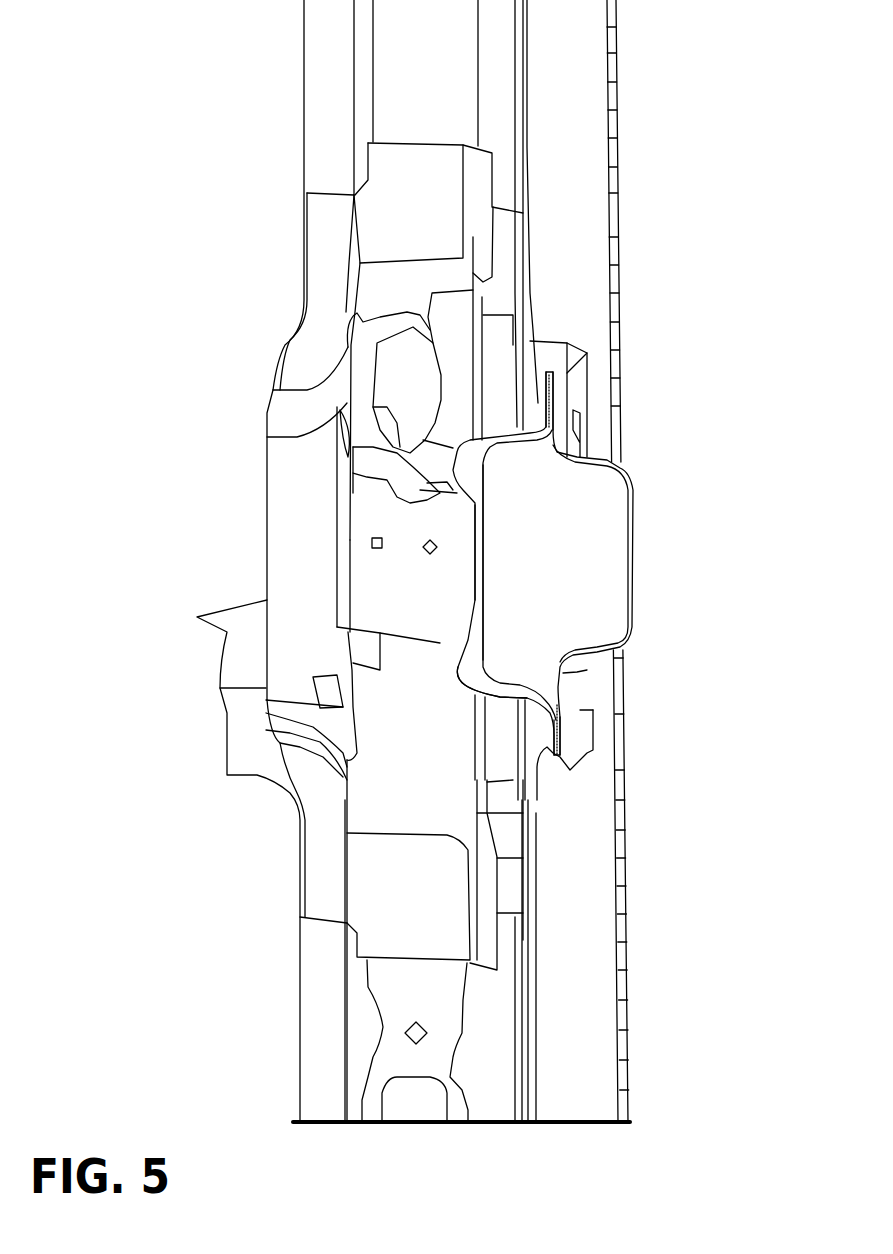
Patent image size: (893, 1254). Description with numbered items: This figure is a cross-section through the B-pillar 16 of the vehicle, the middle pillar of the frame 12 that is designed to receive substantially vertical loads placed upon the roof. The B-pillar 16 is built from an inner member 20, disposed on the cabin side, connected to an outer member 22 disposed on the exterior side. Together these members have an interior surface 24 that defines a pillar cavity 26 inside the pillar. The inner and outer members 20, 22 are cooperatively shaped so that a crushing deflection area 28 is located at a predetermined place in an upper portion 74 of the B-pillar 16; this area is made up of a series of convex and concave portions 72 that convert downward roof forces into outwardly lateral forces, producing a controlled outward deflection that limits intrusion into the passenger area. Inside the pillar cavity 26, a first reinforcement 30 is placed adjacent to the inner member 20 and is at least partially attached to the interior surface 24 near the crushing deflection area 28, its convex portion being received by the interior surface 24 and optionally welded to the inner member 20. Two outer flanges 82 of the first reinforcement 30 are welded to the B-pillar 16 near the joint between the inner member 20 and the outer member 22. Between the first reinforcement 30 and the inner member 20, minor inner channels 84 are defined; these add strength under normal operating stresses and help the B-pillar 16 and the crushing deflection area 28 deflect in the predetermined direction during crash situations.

The frame 12 is at (257, 143).
The B-pillar 16 is at (253, 881).
The inner member 20 is at (297, 502).
The outer member 22 is at (635, 598).
The interior surface 24 is at (583, 487).
The pillar cavity 26 is at (561, 590).
The crushing deflection area 28 is at (476, 566).
The first reinforcement 30 is at (485, 548).
The convex and concave portions 72 is at (432, 493).
The upper portion 74 is at (455, 468).
The outer flanges 82 is at (553, 393).
The minor inner channels 84 is at (467, 672).